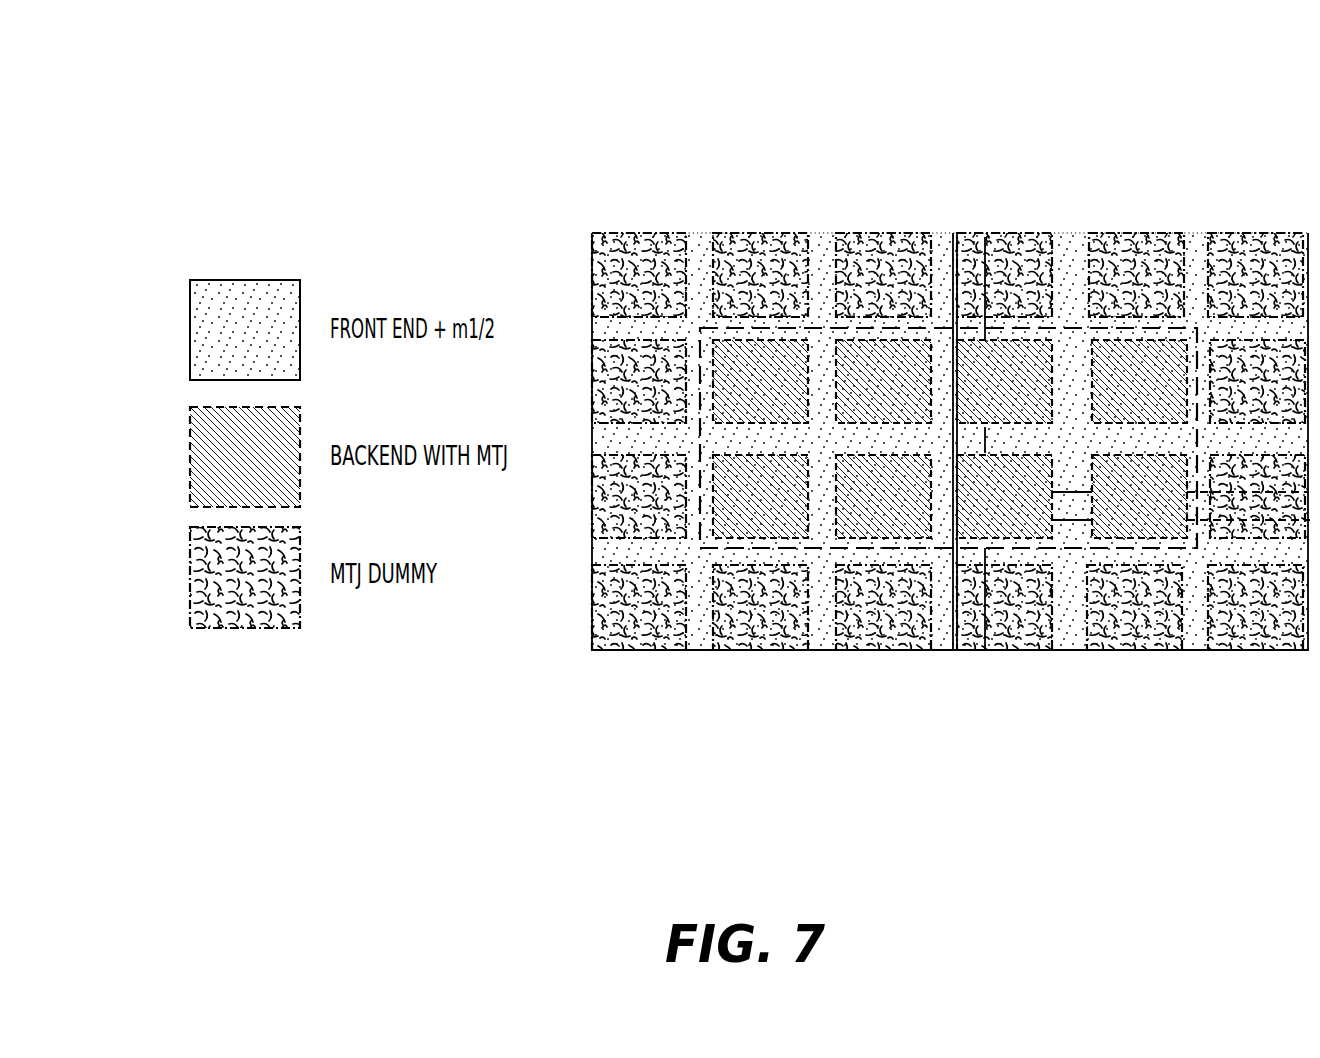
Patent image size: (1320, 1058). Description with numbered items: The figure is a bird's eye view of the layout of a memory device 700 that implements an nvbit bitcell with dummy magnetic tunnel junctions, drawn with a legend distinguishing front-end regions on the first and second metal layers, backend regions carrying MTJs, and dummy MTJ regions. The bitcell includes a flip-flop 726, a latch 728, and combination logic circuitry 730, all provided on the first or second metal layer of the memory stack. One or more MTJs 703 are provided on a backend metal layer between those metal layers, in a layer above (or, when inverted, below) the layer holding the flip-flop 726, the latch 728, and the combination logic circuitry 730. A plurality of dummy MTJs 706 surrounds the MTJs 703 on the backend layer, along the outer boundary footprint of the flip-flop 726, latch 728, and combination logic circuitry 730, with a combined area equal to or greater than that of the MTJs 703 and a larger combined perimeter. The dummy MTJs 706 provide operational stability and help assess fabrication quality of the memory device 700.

The memory device 700 is at (940, 397).
The MTJs 703 is at (939, 548).
The dummy MTJs 706 is at (641, 232).
The flip-flop 726 is at (750, 437).
The latch 728 is at (1070, 250).
The combination logic circuitry 730 is at (1192, 650).